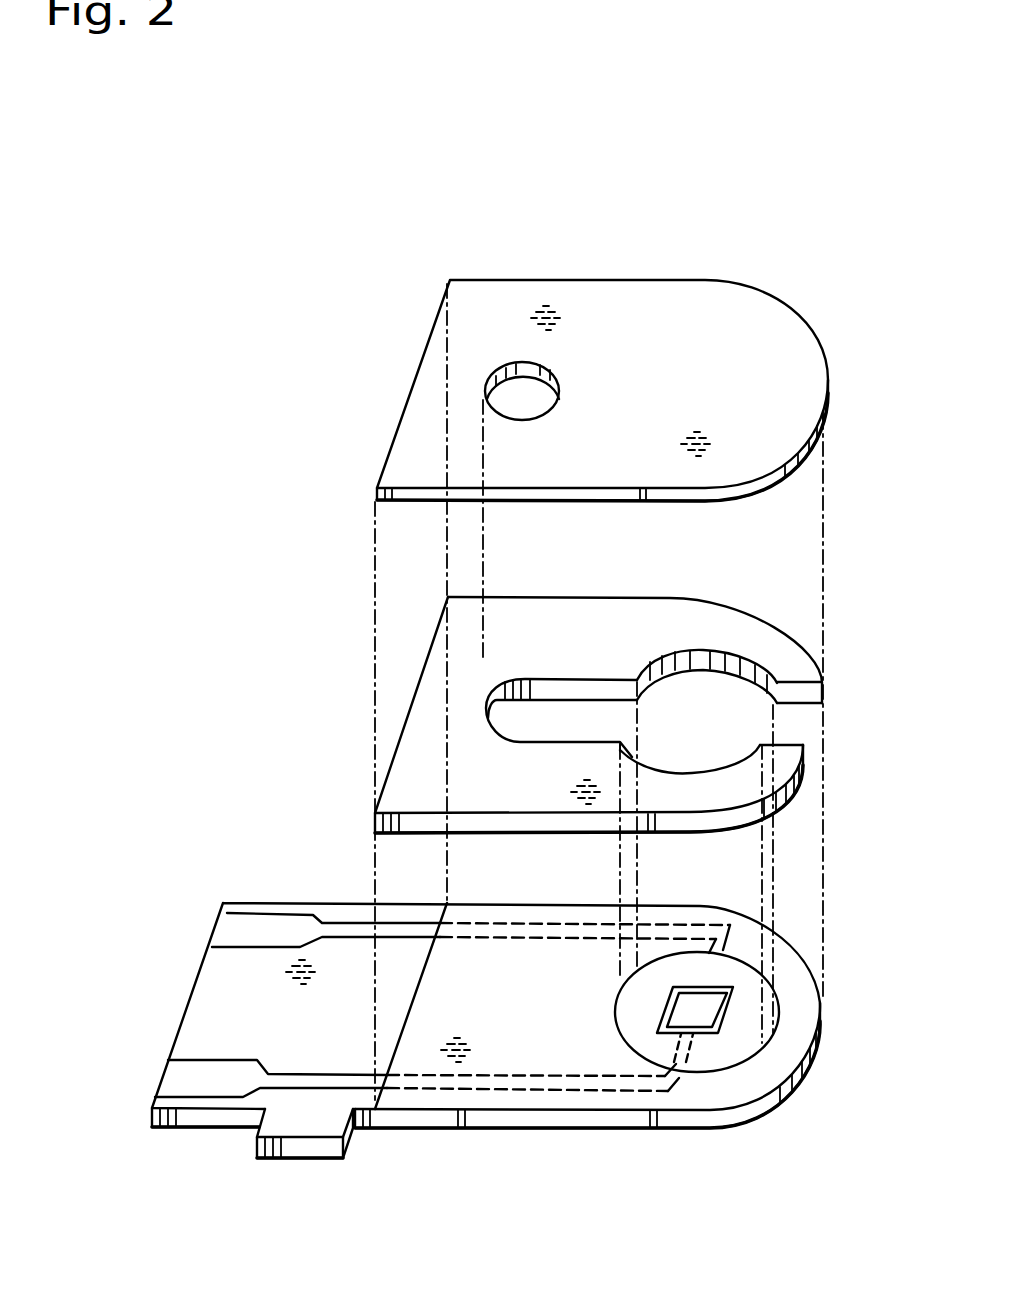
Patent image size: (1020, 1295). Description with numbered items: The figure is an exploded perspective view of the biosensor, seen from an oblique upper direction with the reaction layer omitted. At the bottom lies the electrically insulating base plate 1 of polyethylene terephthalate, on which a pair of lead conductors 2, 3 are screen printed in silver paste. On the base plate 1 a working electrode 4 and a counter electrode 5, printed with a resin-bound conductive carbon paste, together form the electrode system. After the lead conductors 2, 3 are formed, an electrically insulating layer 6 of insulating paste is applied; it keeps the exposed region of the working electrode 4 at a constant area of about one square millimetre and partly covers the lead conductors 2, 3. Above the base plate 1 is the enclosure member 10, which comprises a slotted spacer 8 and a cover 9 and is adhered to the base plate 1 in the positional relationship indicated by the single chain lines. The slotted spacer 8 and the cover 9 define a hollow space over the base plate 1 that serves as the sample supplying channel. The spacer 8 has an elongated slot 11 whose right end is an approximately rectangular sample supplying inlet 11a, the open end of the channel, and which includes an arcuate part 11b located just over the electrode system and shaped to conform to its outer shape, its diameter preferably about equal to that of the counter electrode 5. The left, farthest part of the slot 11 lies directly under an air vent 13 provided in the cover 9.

The electrically insulating base plate 1 is at (287, 1008).
The lead conductor 2 is at (178, 1072).
The lead conductor 3 is at (234, 933).
The working electrode 4 is at (697, 1015).
The counter electrode 5 is at (710, 970).
The electrically insulating layer 6 is at (523, 1053).
The slotted spacer 8 is at (423, 717).
The cover 9 is at (407, 457).
The enclosure member 10 is at (292, 468).
The elongated slot 11 is at (538, 713).
The sample supplying inlet 11a is at (797, 723).
The arcuate part 11b is at (723, 665).
The air vent 13 is at (515, 384).